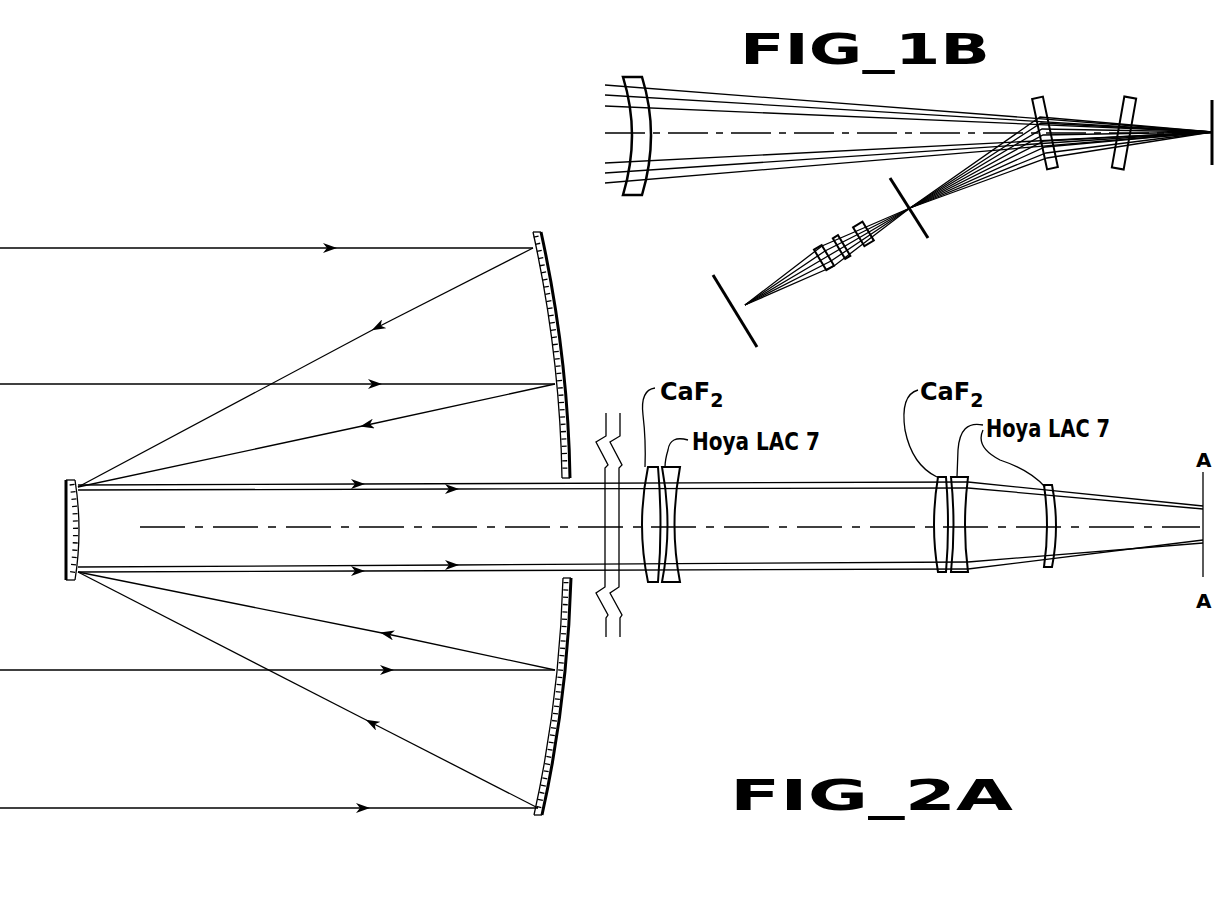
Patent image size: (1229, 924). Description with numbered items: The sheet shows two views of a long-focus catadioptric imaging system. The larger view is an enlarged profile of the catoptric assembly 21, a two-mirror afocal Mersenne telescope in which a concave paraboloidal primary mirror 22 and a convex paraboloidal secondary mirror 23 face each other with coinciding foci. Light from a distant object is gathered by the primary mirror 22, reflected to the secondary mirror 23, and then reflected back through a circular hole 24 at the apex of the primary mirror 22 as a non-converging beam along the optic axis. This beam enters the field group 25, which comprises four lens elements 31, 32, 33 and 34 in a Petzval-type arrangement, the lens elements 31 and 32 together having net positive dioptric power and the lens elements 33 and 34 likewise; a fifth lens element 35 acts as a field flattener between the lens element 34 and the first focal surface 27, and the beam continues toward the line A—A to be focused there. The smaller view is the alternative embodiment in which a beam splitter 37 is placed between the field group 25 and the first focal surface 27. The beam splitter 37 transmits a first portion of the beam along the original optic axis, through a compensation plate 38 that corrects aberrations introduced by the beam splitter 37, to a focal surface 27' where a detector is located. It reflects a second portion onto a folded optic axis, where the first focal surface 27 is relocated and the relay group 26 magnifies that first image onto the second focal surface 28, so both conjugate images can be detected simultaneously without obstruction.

In FIG. 2A, the catoptric assembly 21 is at (548, 230).
In FIG. 2A, the primary mirror 22 is at (553, 316).
In FIG. 2A, the secondary mirror 23 is at (67, 482).
In FIG. 2A, the hole 24 is at (565, 476).
In FIG. 2A, the field group 25 is at (1068, 650).
In FIG. 1B, the relay group 26 is at (828, 287).
In FIG. 1B, the first focal surface 27 is at (945, 212).
In FIG. 1B, the focal surface 27' is at (1184, 151).
In FIG. 1B, the second focal surface 28 is at (755, 335).
In FIG. 2A, the lens element 31 is at (648, 583).
In FIG. 2A, the lens element 32 is at (670, 583).
In FIG. 2A, the lens element 33 is at (942, 572).
In FIG. 2A, the lens element 34 is at (958, 573).
In FIG. 1B, the fifth lens element 35 is at (645, 190).
In FIG. 2A, the fifth lens element 35 is at (1045, 568).
In FIG. 1B, the beam splitter 37 is at (1047, 100).
In FIG. 1B, the compensation plate 38 is at (1122, 110).